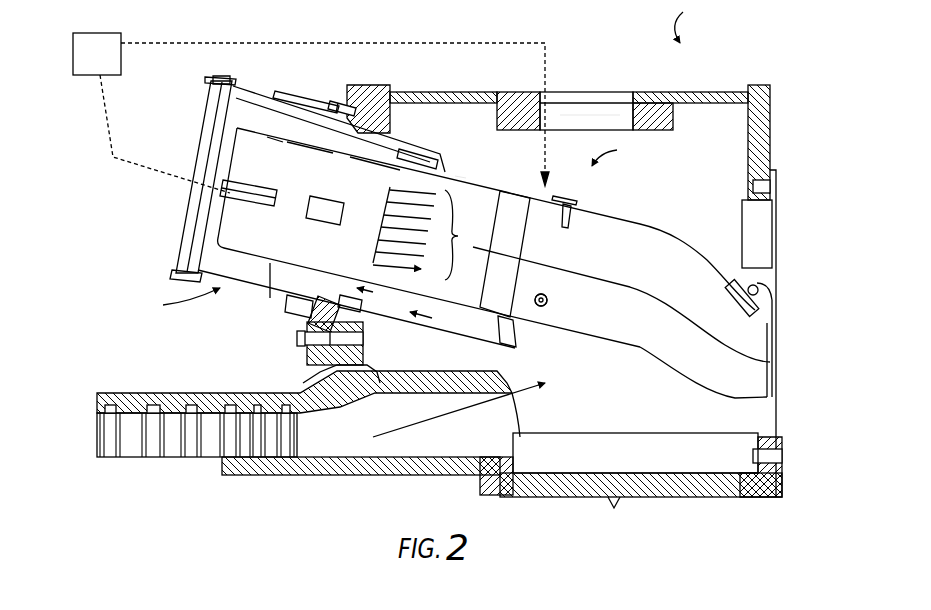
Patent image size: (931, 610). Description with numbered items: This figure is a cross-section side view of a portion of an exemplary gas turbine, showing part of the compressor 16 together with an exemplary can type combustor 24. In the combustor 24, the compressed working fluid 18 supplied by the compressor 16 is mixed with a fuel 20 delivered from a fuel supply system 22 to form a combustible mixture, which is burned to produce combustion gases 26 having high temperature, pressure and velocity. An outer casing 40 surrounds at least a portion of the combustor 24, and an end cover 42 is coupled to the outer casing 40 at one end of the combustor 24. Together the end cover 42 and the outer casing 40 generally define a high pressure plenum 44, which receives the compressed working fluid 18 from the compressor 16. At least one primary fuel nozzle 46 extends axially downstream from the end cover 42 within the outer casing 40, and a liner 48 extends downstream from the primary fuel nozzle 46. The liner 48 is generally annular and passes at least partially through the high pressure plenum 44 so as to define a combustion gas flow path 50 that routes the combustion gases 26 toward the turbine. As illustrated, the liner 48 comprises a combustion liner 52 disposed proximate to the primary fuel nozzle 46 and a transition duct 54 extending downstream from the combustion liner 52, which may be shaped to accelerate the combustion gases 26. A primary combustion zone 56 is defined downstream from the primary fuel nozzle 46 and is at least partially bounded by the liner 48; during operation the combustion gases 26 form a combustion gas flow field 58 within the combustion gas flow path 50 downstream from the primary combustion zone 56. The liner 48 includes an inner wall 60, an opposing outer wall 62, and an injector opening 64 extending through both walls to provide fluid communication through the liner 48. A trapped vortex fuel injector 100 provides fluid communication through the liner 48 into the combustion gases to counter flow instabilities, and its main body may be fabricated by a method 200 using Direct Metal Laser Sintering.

The compressor 16 is at (196, 392).
The compressed working fluid 18 is at (253, 117).
The fuel 20 is at (383, 43).
The fuel supply system 22 is at (86, 65).
The combustor 24 is at (423, 158).
The combustion gases 26 is at (382, 222).
The outer casing 40 is at (663, 91).
The end cover 42 is at (193, 234).
The high pressure plenum 44 is at (667, 170).
The primary fuel nozzle 46 is at (267, 185).
The liner 48 is at (470, 160).
The combustion gas flow path 50 is at (478, 247).
The combustion liner 52 is at (462, 176).
The transition duct 54 is at (716, 232).
The primary combustion zone 56 is at (336, 226).
The combustion gas flow field 58 is at (452, 255).
The inner wall 60 is at (620, 343).
The outer wall 62 is at (670, 382).
The injector opening 64 is at (553, 300).
The trapped vortex fuel injector 100 is at (583, 200).
The method 200 is at (623, 152).